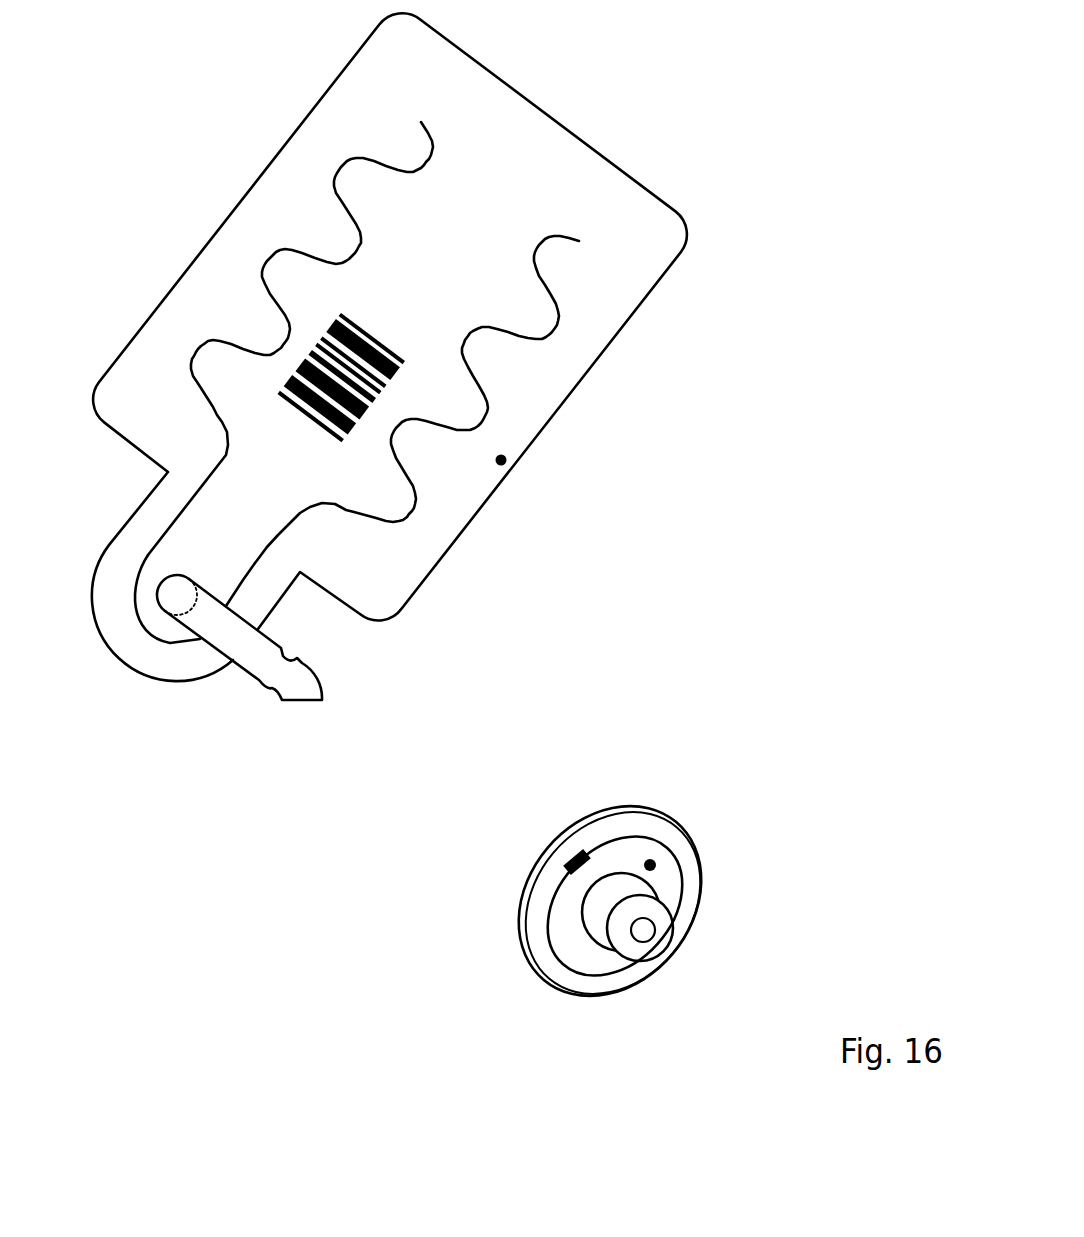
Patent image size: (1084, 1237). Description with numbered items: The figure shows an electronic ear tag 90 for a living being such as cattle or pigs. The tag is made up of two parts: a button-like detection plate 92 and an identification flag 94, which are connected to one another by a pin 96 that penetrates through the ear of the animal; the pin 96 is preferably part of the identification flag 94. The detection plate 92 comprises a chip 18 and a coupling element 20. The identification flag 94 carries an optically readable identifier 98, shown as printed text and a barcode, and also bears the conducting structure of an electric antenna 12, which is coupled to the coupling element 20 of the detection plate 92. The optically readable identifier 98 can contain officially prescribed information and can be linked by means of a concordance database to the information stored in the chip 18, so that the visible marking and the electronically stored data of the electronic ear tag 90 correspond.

The electric antenna 12 is at (418, 532).
The chip 18 is at (560, 845).
The coupling element 20 is at (672, 900).
The electronic ear tag 90 is at (707, 588).
The detection plate 92 is at (652, 863).
The identification flag 94 is at (501, 460).
The pin 96 is at (330, 692).
The optically readable identifier 98 is at (421, 358).